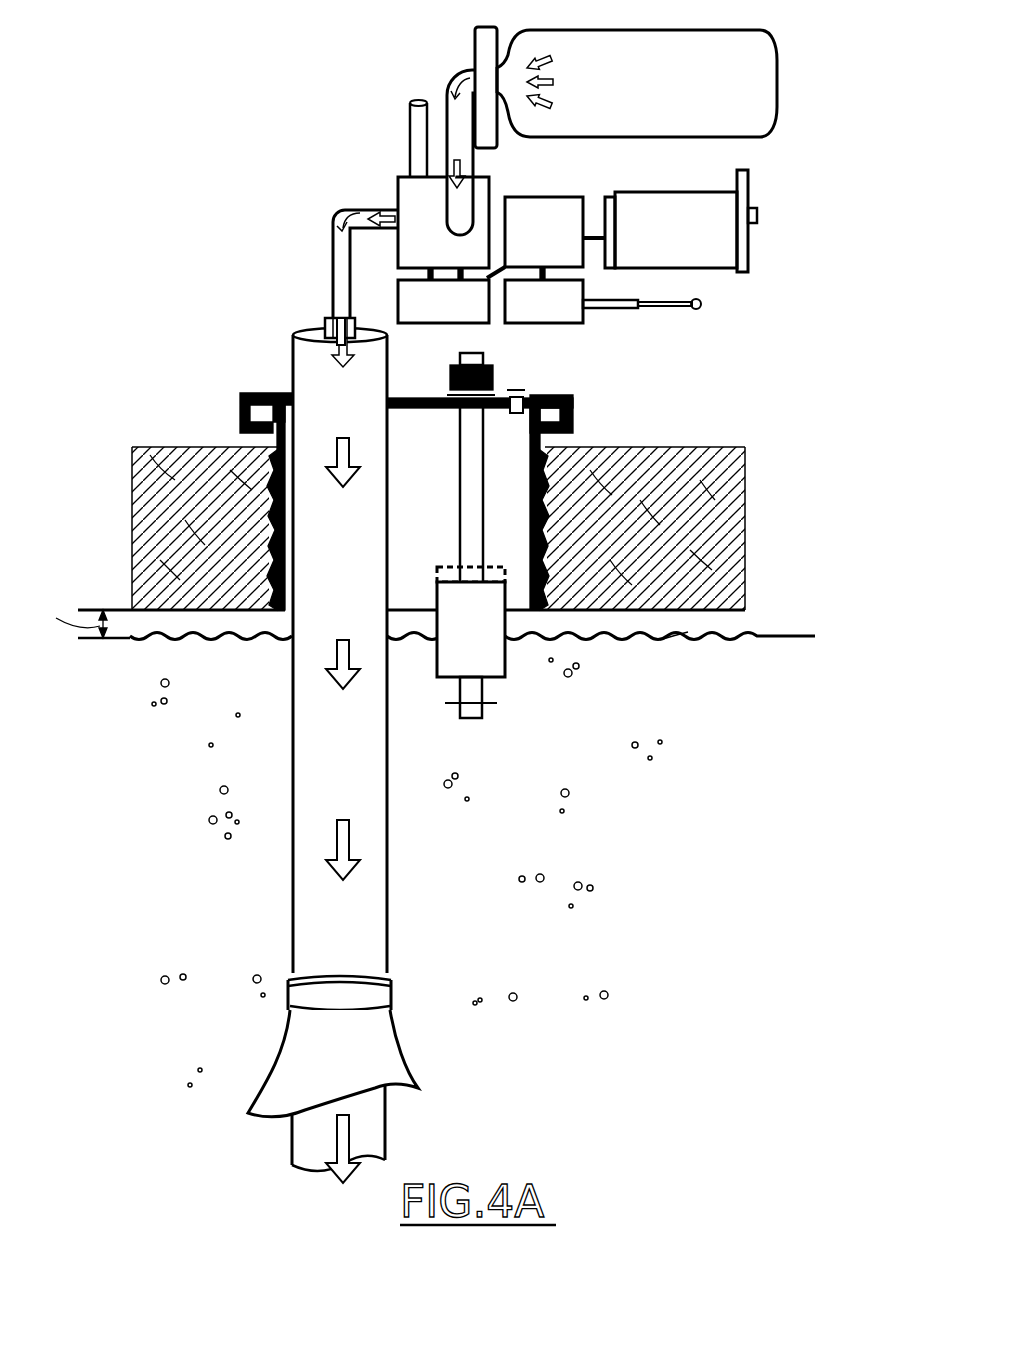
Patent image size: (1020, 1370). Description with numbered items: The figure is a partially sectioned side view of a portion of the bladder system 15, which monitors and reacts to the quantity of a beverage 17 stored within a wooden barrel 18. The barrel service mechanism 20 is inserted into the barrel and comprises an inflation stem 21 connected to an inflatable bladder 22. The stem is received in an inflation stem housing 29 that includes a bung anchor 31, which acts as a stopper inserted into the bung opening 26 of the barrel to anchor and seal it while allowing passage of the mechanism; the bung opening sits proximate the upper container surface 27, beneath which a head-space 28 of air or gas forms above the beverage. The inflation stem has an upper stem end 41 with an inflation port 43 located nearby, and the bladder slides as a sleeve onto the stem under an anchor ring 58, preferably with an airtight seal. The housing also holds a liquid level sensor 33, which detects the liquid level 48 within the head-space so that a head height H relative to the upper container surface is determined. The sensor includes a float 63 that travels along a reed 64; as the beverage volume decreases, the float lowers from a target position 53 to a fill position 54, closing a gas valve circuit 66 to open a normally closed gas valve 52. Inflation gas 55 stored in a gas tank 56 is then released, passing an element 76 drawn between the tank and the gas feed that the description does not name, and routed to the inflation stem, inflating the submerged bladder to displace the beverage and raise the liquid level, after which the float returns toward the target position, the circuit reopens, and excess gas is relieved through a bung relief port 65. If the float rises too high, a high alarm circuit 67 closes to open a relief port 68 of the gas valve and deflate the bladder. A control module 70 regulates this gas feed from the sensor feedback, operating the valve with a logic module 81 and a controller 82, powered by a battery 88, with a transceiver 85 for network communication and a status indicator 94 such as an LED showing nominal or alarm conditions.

The bladder system 15 is at (190, 110).
The beverage 17 is at (218, 892).
The barrel 18 is at (152, 447).
The barrel service mechanism 20 is at (432, 808).
The inflation stem 21 is at (325, 668).
The inflatable bladder 22 is at (312, 1039).
The bung opening 26 is at (276, 611).
The upper container surface 27 is at (689, 625).
The head-space 28 is at (186, 636).
The inflation stem housing 29 is at (274, 368).
The bung anchor 31 is at (275, 437).
The liquid level sensor 33 is at (446, 392).
The upper stem end 41 is at (308, 332).
The inflation port 43 is at (332, 318).
The liquid level 48 is at (748, 637).
The gas valve 52 is at (410, 190).
The target position 53 is at (448, 567).
The fill position 54 is at (458, 616).
The inflation gas 55 is at (547, 103).
The gas tank 56 is at (750, 125).
The anchor ring 58 is at (383, 997).
The float 63 is at (485, 655).
The reed 64 is at (470, 492).
The bung relief port 65 is at (528, 394).
The gas valve circuit 66 is at (428, 273).
The high alarm circuit 67 is at (462, 278).
The relief port 68 is at (418, 140).
The control module 70 is at (428, 80).
The filter plate 76 is at (485, 62).
The logic module 81 is at (568, 212).
The controller 82 is at (482, 313).
The transceiver 85 is at (570, 313).
The battery 88 is at (712, 200).
The status indicator 94 is at (755, 220).